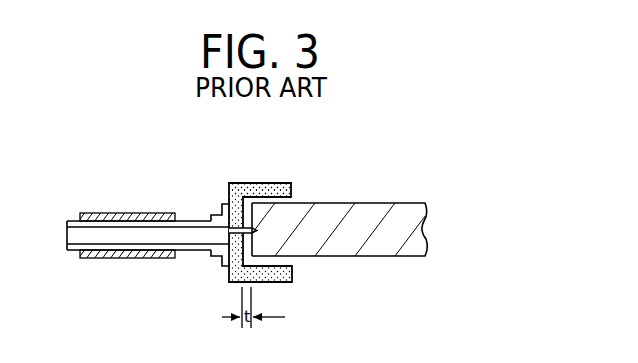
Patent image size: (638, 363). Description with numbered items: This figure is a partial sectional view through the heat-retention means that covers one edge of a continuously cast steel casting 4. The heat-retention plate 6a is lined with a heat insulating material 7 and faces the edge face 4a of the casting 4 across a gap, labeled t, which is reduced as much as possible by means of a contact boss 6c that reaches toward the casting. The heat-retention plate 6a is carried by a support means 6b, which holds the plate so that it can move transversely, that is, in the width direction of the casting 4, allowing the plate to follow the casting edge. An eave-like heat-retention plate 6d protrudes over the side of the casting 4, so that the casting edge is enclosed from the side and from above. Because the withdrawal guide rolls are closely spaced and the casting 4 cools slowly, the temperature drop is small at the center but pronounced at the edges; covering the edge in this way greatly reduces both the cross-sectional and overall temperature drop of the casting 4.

The steel casting 4 is at (387, 245).
The edge face of the casting 4a is at (258, 233).
The heat-retention plate 6a is at (228, 190).
The support means 6b is at (131, 206).
The contact boss 6c is at (256, 230).
The eave-like heat-retention plate 6d is at (246, 182).
The heat insulating material 7 is at (270, 182).